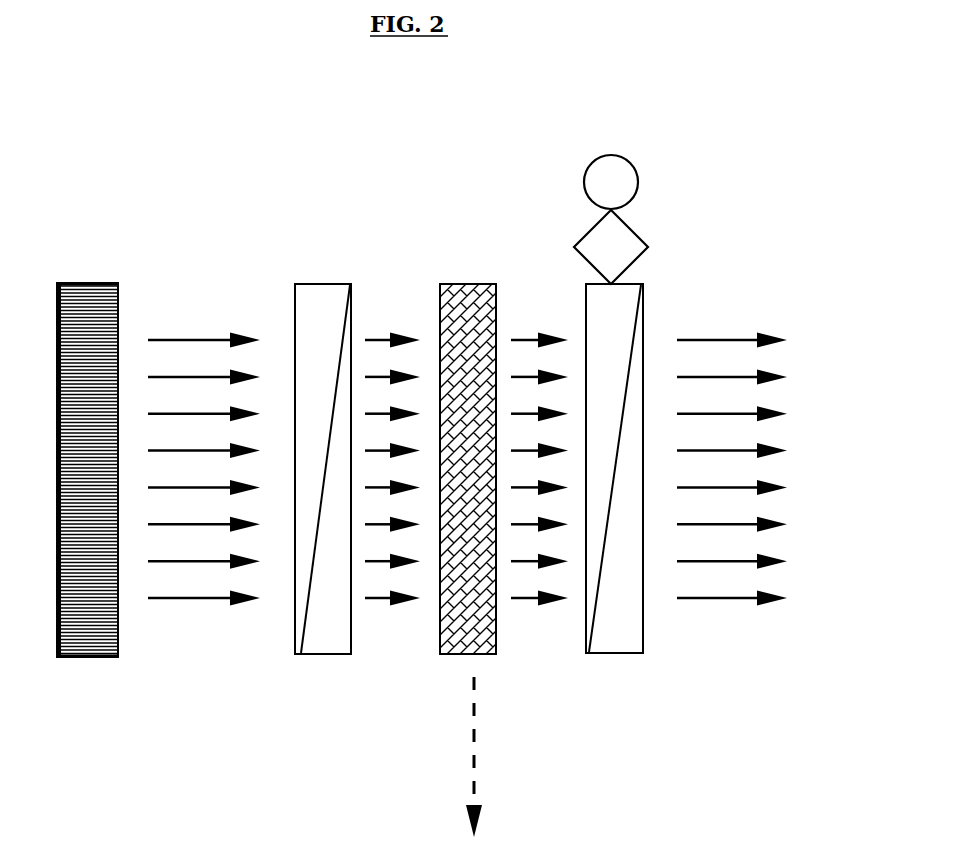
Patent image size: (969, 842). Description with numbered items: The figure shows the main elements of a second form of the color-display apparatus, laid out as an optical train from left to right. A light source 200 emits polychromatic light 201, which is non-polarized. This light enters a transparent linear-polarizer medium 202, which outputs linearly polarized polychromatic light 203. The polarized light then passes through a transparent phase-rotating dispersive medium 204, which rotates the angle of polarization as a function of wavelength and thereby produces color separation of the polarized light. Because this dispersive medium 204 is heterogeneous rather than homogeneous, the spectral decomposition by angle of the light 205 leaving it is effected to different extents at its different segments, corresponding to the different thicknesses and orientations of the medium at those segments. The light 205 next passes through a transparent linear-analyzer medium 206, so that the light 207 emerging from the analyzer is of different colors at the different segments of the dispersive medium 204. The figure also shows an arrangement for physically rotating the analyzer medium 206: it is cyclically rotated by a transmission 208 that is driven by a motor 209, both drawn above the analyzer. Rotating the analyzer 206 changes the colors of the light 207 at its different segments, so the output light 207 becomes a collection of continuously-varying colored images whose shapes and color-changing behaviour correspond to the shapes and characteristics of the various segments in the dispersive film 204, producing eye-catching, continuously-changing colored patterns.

The light source 200 is at (93, 657).
The polychromatic light 201 is at (188, 599).
The transparent linear-polarizer medium 202 is at (315, 654).
The linearly polarized polychromatic light 203 is at (385, 598).
The transparent phase-rotating dispersive medium 204 is at (460, 654).
The light leaving the dispersive medium 205 is at (533, 598).
The transparent linear-analyzer medium 206 is at (608, 653).
The output light 207 is at (735, 597).
The transmission 208 is at (648, 242).
The motor 209 is at (640, 174).